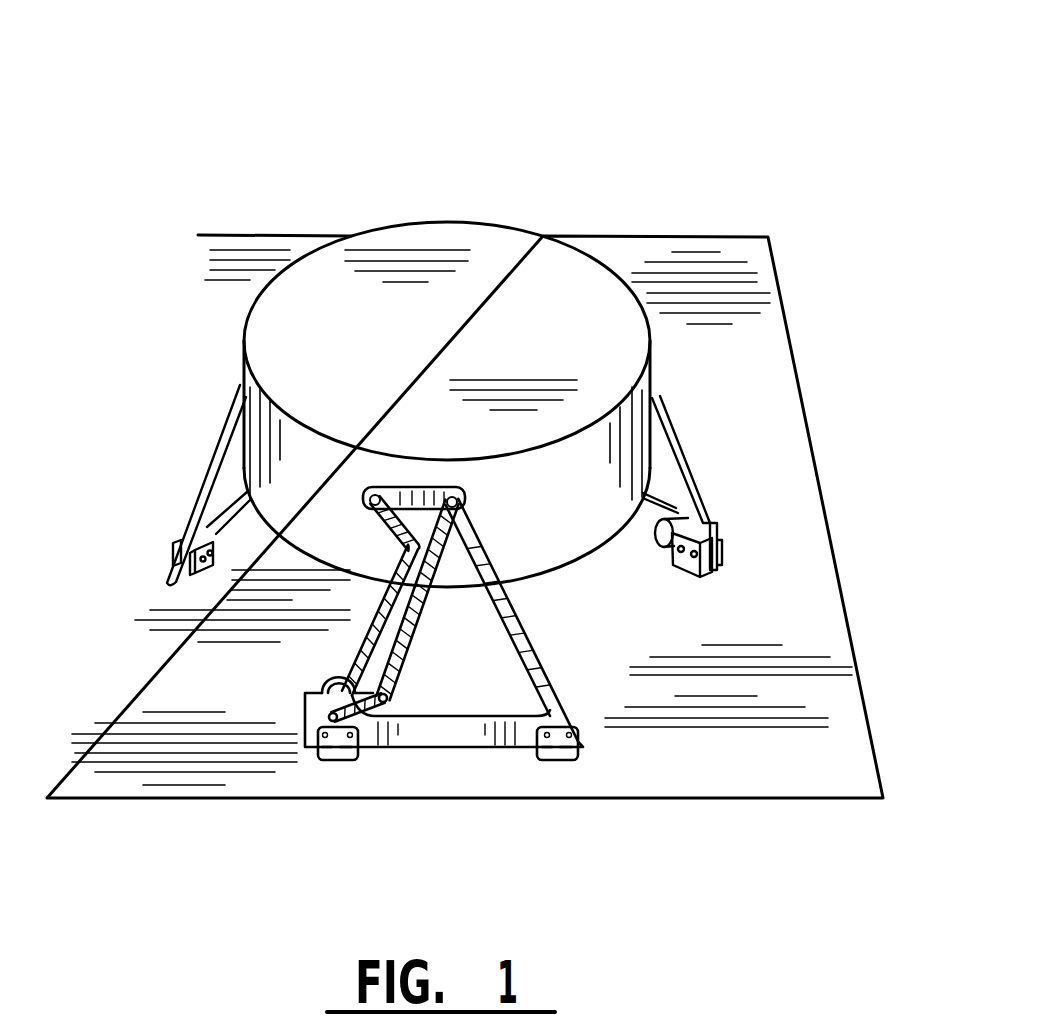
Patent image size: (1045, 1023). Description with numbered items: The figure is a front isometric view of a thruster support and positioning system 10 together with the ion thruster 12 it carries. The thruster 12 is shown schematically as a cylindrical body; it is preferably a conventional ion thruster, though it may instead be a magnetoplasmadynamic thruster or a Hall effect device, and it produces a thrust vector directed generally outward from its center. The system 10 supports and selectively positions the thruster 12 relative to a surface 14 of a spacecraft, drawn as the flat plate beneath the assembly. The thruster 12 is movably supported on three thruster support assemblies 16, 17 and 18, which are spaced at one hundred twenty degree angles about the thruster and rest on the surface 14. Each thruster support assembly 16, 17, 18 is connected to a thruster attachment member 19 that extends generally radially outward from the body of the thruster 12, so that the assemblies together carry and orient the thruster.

The thruster support and positioning system 10 is at (715, 177).
The ion thruster 12 is at (482, 337).
The surface of a spacecraft 14 is at (808, 652).
The thruster support assembly 16 is at (568, 694).
The thruster support assembly 17 is at (660, 418).
The thruster support assembly 18 is at (218, 448).
The thruster attachment member 19 is at (468, 503).